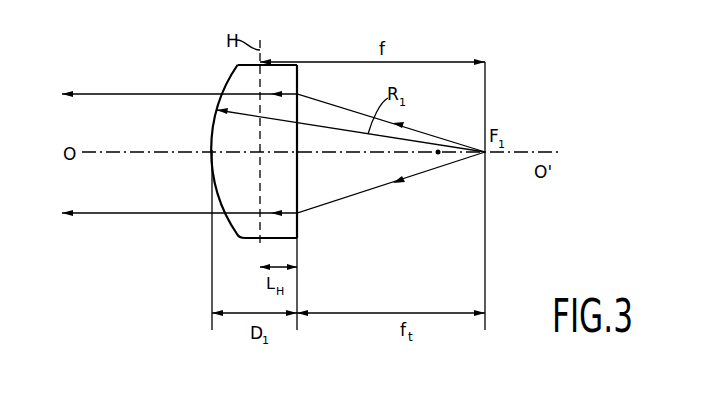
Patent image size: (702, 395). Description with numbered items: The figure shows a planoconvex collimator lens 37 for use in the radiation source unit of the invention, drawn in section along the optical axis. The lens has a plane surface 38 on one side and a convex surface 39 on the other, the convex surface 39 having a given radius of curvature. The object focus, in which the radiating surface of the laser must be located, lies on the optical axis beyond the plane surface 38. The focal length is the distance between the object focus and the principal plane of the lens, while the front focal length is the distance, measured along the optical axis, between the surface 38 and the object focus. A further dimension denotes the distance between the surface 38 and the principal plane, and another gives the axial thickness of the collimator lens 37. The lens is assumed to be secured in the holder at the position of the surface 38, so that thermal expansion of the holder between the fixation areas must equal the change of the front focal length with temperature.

The planoconvex collimator lens 37 is at (283, 59).
The surface of the lens 38 is at (297, 232).
The convex surface of the lens 39 is at (227, 222).